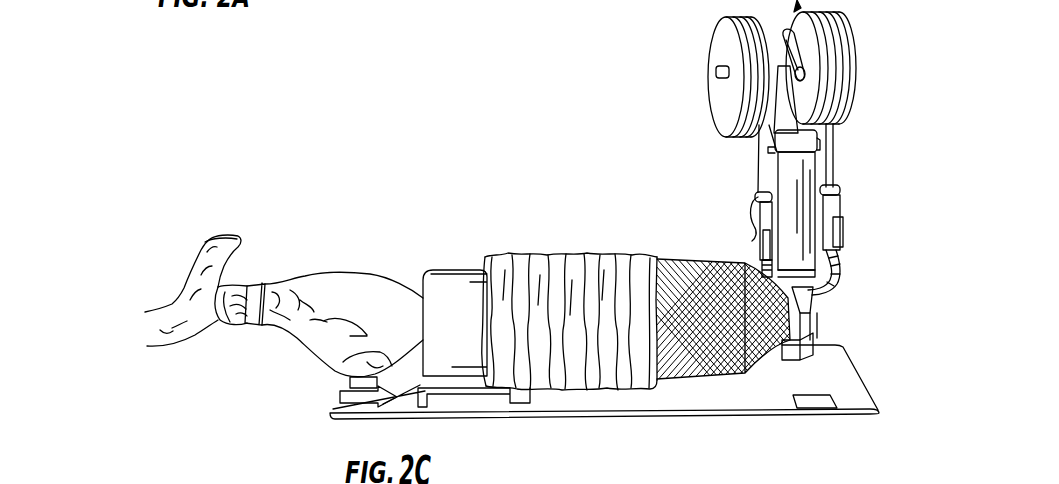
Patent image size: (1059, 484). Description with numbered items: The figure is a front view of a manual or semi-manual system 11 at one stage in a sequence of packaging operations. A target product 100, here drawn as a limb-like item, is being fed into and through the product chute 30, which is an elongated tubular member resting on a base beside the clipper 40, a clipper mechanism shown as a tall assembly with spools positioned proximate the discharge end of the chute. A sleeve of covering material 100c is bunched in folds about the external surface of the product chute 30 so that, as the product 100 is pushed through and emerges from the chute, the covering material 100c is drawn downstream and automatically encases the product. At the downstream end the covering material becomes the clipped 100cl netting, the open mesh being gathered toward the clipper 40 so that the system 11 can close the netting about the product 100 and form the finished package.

The manual or semi-manual system 11 is at (532, 170).
The product chute 30 is at (444, 268).
The clipper 40 is at (548, 483).
The target product 100 is at (313, 337).
The sleeve of covering material 100c is at (600, 254).
The clipped package of netting 100cl is at (788, 299).